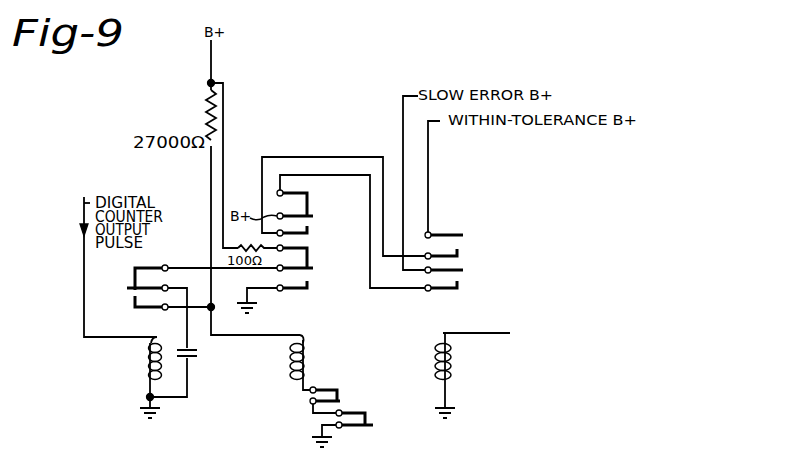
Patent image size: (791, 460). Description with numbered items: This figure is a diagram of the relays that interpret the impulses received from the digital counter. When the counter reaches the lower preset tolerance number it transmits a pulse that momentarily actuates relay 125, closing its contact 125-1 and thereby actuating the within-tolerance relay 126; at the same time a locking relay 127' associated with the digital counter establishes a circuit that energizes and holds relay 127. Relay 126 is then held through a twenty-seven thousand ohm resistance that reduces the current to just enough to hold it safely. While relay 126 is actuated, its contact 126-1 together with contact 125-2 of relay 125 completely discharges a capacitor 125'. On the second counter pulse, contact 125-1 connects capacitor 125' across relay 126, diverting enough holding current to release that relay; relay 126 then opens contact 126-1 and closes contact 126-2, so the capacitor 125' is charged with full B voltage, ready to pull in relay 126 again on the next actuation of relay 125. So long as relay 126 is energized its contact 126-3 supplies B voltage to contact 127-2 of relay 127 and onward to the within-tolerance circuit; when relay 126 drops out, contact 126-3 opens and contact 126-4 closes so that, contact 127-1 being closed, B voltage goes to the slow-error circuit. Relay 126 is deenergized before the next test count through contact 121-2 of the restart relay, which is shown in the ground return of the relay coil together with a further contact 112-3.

The relay 125 is at (126, 370).
The capacitor 125' is at (207, 375).
The contact 125-1 is at (161, 299).
The contact 125-2 is at (161, 277).
The within-tolerance relay 126 is at (292, 369).
The contact 126-1 is at (319, 288).
The contact 126-2 is at (319, 253).
The contact 126-3 is at (319, 233).
The contact 126-4 is at (319, 200).
The relay 127 is at (425, 362).
The locking relay 127' is at (623, 337).
The contact 127-1 is at (468, 288).
The contact 127-2 is at (468, 256).
The contact 121-2 is at (348, 391).
The relay 112 contact 112-3 is at (379, 418).